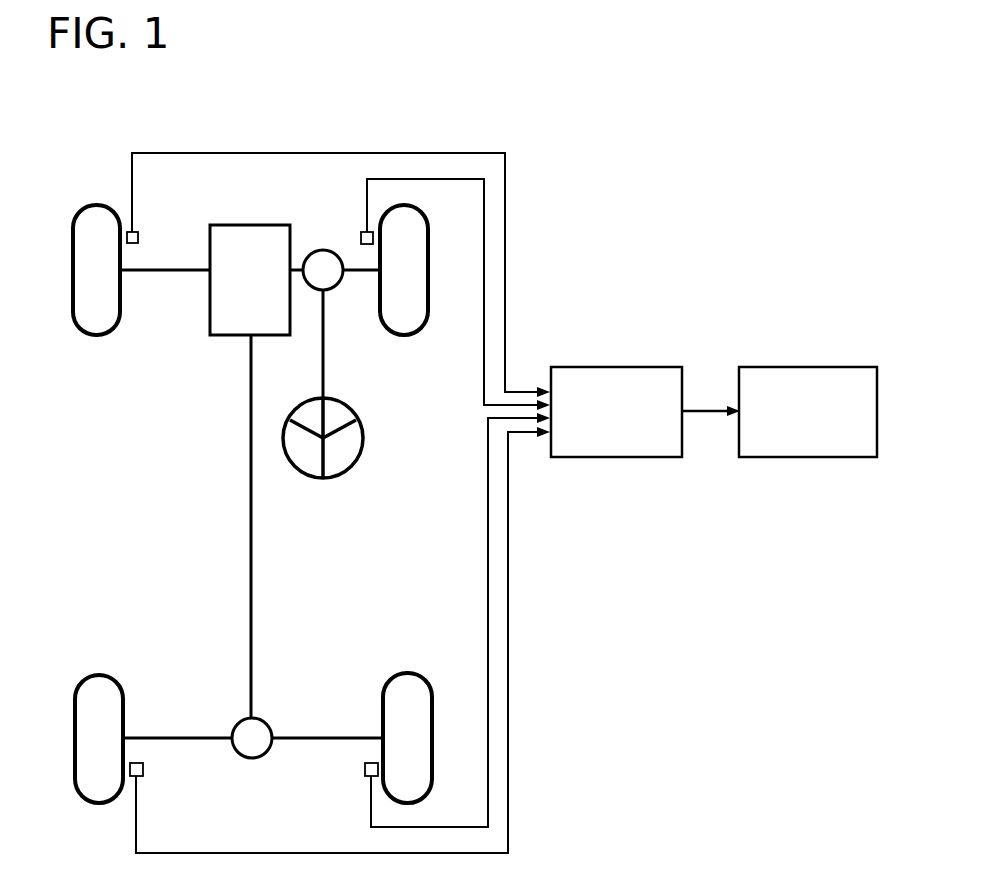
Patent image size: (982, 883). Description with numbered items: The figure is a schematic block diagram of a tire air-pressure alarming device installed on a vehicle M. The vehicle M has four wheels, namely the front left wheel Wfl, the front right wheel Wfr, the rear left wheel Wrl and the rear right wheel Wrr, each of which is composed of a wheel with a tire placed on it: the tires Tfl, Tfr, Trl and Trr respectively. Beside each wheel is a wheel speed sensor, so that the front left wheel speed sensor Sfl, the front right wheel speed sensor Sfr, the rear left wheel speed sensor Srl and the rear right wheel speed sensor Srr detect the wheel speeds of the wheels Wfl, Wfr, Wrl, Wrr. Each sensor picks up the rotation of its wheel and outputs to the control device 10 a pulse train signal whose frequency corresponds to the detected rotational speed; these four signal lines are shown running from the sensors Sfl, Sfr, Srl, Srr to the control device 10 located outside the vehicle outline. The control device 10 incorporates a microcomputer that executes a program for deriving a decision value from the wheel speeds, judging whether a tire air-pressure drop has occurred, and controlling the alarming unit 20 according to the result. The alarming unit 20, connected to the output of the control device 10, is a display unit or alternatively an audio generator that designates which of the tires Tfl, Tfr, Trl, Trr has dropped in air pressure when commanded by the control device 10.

The vehicle M is at (272, 128).
The front left tire Tfl is at (87, 270).
The front right tire Tfr is at (413, 277).
The rear left tire Trl is at (90, 738).
The rear right tire Trr is at (423, 738).
The front left wheel Wfl is at (100, 327).
The front right wheel Wfr is at (407, 327).
The rear left wheel Wrl is at (102, 682).
The rear right wheel Wrr is at (412, 680).
The front left wheel speed sensor Sfl is at (142, 237).
The front right wheel speed sensor Sfr is at (360, 238).
The rear left wheel speed sensor Srl is at (143, 770).
The rear right wheel speed sensor Srr is at (365, 770).
The control device 10 is at (617, 367).
The alarming unit 20 is at (832, 367).